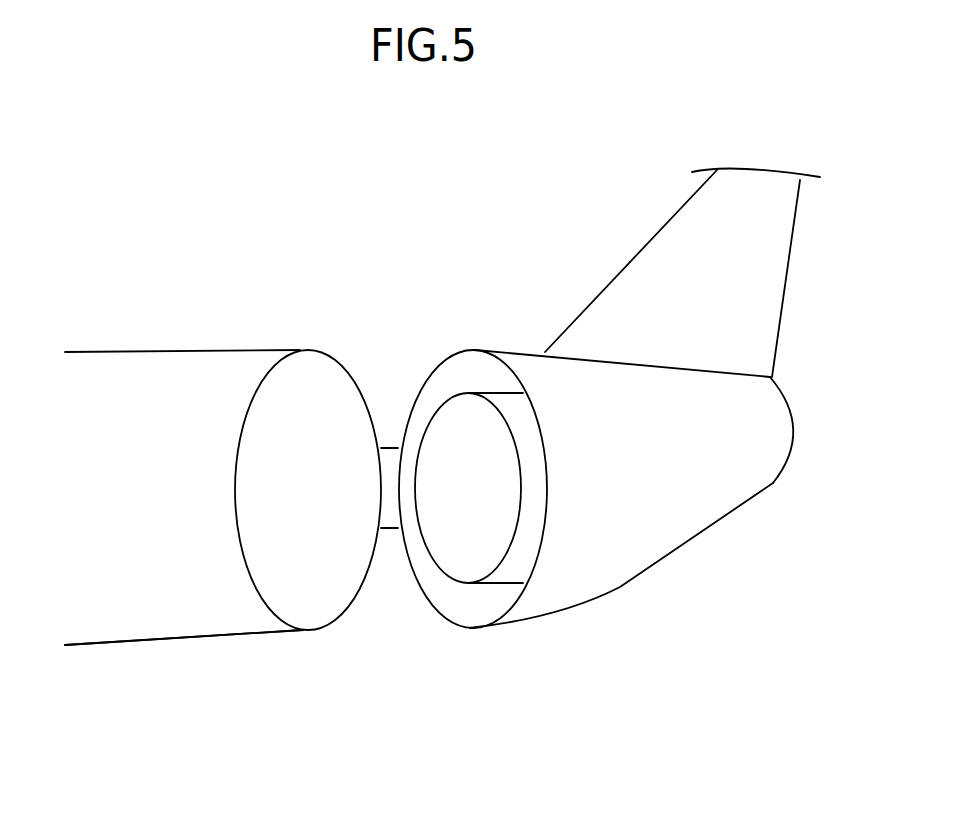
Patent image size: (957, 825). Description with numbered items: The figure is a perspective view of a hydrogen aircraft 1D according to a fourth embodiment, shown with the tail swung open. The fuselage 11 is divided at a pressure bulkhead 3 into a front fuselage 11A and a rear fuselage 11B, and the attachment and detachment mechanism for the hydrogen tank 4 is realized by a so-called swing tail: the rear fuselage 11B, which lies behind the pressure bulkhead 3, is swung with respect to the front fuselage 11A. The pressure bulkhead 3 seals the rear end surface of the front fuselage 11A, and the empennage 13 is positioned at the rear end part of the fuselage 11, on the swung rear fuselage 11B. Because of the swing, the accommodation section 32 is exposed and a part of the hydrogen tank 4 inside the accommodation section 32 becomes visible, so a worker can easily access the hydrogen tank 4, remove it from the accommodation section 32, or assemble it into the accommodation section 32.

The hydrogen aircraft 1D is at (485, 190).
The fuselage 11 is at (160, 323).
The front fuselage 11A is at (158, 643).
The rear fuselage 11B is at (687, 549).
The pressure bulkhead 3 is at (323, 387).
The accommodation section 32 is at (440, 385).
The hydrogen tank 4 is at (463, 548).
The empennage 13 is at (781, 257).